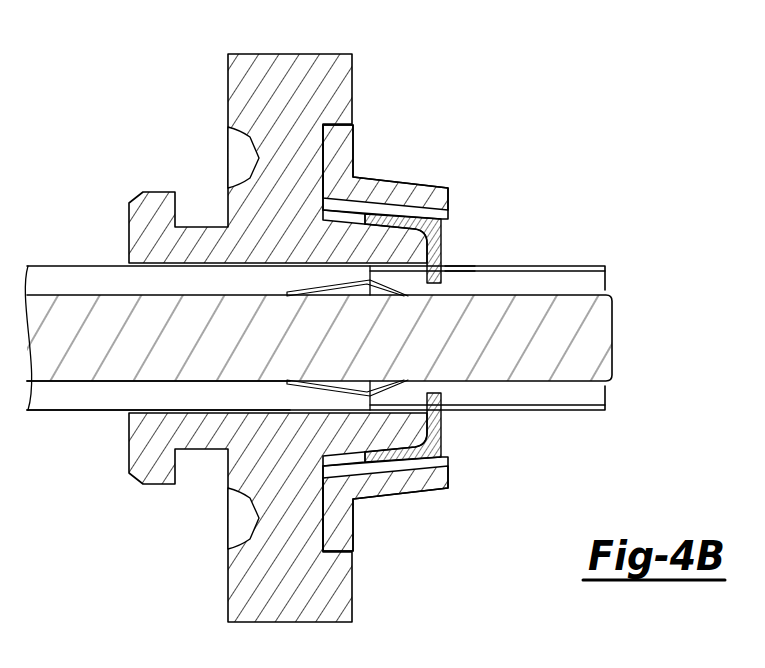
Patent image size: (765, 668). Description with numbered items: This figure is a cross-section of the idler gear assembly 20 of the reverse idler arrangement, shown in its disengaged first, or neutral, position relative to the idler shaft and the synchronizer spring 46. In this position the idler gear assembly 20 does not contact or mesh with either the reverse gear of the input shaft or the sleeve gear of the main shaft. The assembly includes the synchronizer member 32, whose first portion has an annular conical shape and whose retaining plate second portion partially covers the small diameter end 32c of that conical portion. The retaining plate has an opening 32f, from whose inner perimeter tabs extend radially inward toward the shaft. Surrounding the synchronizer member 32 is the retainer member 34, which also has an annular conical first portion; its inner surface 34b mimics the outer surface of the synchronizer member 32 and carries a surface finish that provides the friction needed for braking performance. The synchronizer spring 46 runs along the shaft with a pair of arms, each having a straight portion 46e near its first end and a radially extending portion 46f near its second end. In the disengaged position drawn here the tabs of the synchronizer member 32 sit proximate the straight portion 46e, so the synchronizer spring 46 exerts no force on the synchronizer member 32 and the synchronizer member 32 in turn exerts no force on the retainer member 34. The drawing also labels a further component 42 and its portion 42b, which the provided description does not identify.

The idler gear assembly 20 is at (379, 60).
The synchronizer member 32 is at (391, 217).
The small diameter end 32c is at (446, 221).
The opening 32f is at (462, 274).
The retainer member 34 is at (446, 481).
The inner surface 34b is at (408, 451).
The tube 42 is at (57, 277).
The tube wall 42b is at (67, 382).
The synchronizer spring 46 is at (562, 384).
The straight portion 46e is at (580, 289).
The radially extending portion 46f is at (385, 281).